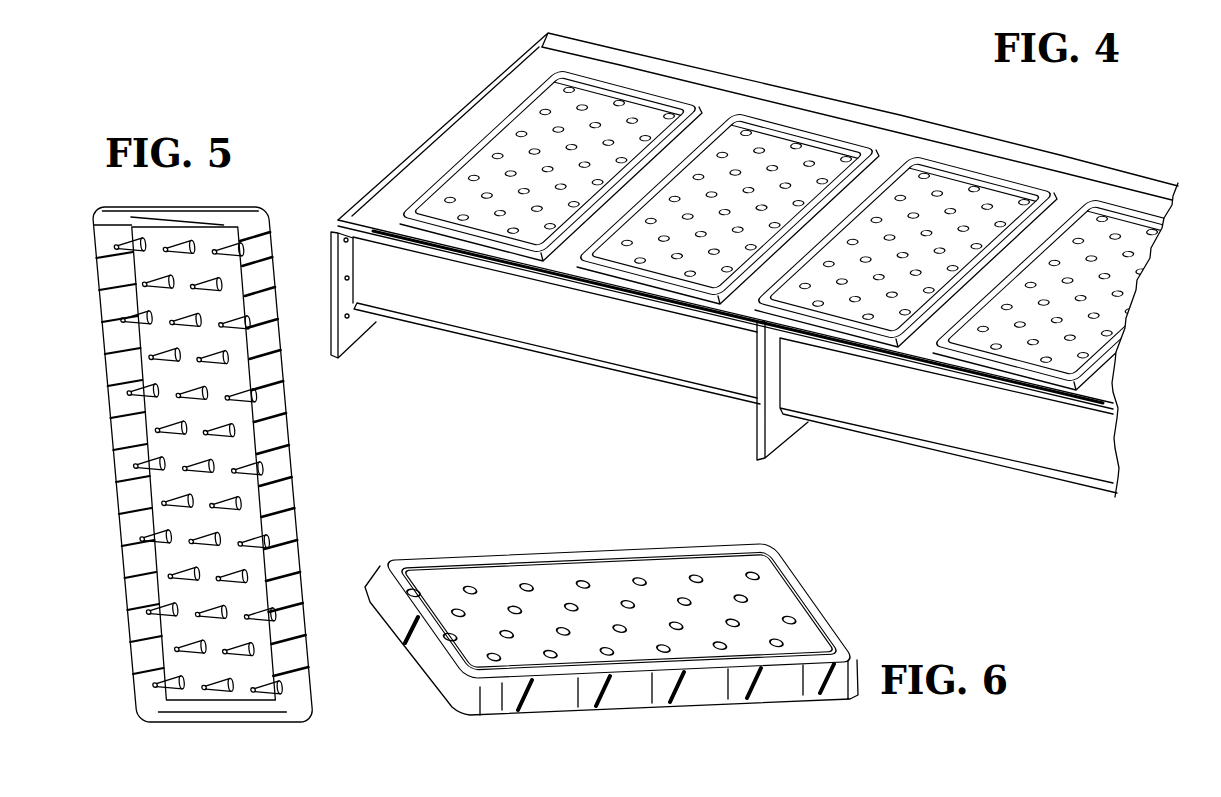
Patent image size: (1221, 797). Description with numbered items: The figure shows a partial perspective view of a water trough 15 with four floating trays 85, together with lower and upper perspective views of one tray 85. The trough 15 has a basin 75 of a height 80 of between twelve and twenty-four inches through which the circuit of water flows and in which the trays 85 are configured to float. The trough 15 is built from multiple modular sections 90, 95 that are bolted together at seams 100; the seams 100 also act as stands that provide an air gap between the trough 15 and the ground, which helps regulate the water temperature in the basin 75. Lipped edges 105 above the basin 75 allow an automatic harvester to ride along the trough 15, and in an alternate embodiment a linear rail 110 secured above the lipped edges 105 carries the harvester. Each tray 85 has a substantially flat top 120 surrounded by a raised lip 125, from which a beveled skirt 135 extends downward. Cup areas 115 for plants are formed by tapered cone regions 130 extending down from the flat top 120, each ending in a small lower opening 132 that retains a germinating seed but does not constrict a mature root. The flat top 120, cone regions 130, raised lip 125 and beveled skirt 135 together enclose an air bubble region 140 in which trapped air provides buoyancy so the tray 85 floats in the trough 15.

In FIG. 4, the water trough 15 is at (372, 63).
In FIG. 4, the basin 75 is at (508, 107).
In FIG. 4, the height 80 is at (1124, 412).
In FIG. 4, the tray 85 is at (628, 128).
In FIG. 4, the modular section 90 is at (553, 352).
In FIG. 4, the modular section 95 is at (1013, 443).
In FIG. 4, the seam 100 is at (765, 415).
In FIG. 4, the lipped edge 105 is at (764, 97).
In FIG. 4, the linear rail 110 is at (742, 328).
In FIG. 6, the cup area 115 is at (527, 588).
In FIG. 6, the flat top 120 is at (453, 600).
In FIG. 6, the raised lip 125 is at (820, 615).
In FIG. 5, the tapered cone region 130 is at (150, 395).
In FIG. 5, the lower opening 132 is at (130, 390).
In FIG. 5, the beveled skirt 135 is at (287, 513).
In FIG. 5, the air bubble region 140 is at (243, 430).